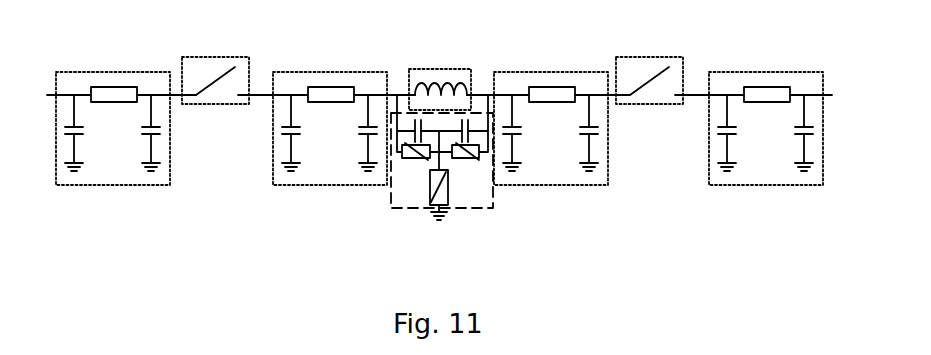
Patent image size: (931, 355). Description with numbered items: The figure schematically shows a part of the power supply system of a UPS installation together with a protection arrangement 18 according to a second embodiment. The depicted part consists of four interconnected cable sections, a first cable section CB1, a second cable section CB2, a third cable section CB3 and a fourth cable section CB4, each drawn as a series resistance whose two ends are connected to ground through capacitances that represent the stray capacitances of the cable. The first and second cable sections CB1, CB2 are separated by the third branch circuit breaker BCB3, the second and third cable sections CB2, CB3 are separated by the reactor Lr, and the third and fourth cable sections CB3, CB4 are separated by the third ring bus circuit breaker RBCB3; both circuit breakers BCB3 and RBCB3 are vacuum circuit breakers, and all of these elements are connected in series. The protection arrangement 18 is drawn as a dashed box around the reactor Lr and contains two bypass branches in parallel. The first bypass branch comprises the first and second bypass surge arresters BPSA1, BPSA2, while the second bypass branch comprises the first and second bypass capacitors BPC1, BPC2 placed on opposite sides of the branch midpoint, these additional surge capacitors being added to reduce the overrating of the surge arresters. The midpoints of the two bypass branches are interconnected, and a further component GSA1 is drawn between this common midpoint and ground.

The protection arrangement 18 is at (387, 100).
The first cable section CB1 is at (113, 111).
The second cable section CB2 is at (330, 111).
The third cable section CB3 is at (551, 111).
The fourth cable section CB4 is at (766, 111).
The third branch circuit breaker BCB3 is at (214, 61).
The third ring bus circuit breaker RBCB3 is at (645, 65).
The reactor Lr is at (440, 73).
The first bypass capacitor BPC1 is at (415, 133).
The second bypass capacitor BPC2 is at (468, 133).
The first bypass surge arrester BPSA1 is at (422, 158).
The second bypass surge arrester BPSA2 is at (465, 158).
The ground surge arrester GSA1 is at (448, 200).